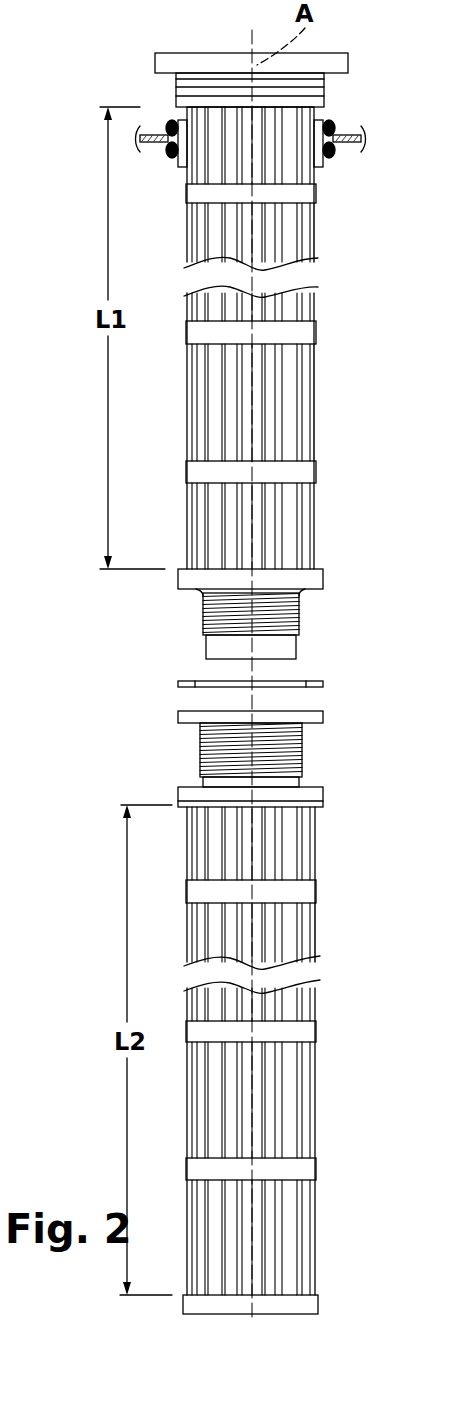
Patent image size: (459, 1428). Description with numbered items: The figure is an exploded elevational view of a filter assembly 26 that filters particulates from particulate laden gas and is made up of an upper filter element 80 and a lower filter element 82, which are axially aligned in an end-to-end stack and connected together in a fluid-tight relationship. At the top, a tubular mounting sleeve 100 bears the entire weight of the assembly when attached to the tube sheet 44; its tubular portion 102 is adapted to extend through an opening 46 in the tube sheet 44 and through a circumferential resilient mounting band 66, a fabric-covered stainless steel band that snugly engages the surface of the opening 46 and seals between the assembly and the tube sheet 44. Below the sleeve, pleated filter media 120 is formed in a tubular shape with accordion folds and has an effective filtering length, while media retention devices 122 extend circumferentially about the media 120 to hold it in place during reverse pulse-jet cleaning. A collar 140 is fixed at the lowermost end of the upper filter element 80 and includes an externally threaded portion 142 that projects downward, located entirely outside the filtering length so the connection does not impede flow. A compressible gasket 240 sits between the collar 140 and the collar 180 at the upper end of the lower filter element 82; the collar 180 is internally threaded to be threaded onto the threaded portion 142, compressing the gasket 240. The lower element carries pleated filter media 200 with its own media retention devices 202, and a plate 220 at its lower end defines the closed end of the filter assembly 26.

The tubular mounting sleeve 100 is at (346, 50).
The tubular portion 102 is at (325, 88).
The tube sheet 44 is at (352, 125).
The opening 46 is at (190, 150).
The circumferential resilient mounting band 66 is at (170, 120).
The pleated filter media 120 is at (290, 227).
The media retention devices 122 is at (192, 193).
The filter assembly 26 is at (330, 257).
The upper filter element 80 is at (320, 390).
The collar 140 is at (302, 610).
The externally threaded portion 142 is at (218, 618).
The compressible gasket 240 is at (323, 682).
The collar 180 is at (305, 723).
The lower filter element 82 is at (318, 925).
The pleated filter media 200 is at (288, 1092).
The media retention devices 202 is at (200, 892).
The plate 220 is at (313, 1306).